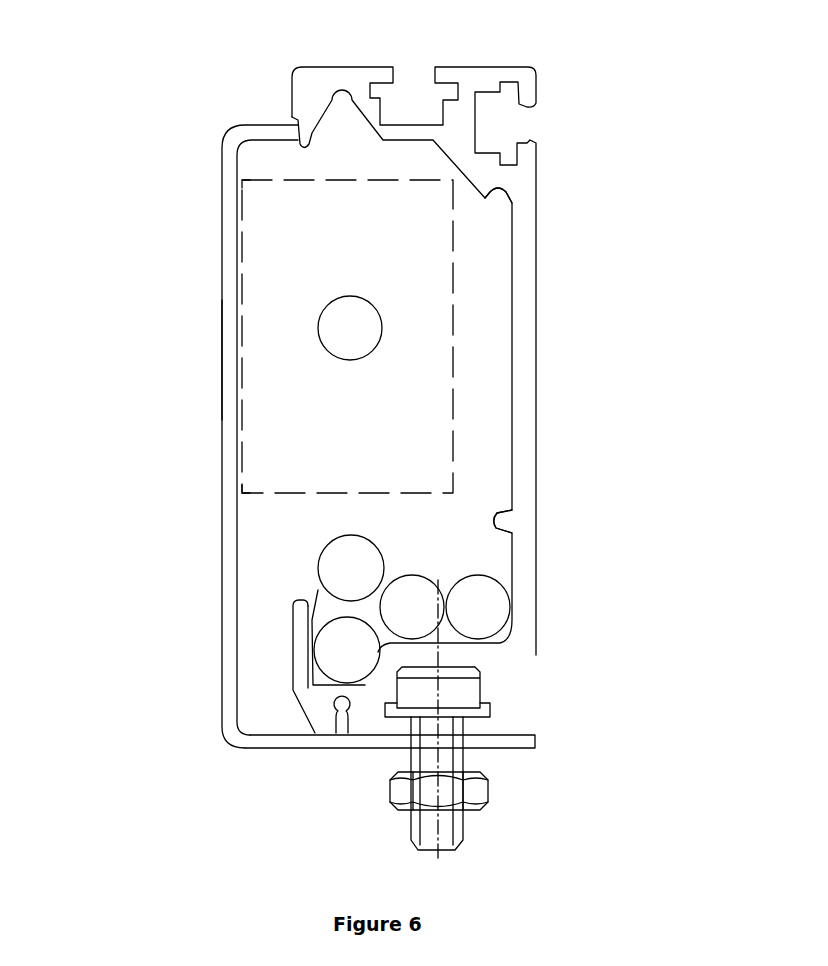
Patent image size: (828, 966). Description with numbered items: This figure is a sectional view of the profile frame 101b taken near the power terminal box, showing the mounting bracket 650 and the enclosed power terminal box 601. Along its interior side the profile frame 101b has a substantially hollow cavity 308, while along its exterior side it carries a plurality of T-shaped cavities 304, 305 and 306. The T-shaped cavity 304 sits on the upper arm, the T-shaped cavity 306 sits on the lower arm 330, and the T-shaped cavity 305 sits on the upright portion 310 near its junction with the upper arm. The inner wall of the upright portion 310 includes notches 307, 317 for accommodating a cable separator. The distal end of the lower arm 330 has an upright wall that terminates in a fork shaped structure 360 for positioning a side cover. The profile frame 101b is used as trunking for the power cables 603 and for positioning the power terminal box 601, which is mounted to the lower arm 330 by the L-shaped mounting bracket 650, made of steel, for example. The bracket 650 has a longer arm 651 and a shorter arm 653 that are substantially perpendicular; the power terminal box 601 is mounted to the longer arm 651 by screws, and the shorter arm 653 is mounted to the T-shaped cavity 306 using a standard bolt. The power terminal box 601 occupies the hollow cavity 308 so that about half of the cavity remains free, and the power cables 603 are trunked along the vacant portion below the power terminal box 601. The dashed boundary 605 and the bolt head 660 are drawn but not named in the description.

The profile frame 101b is at (170, 772).
The T-shaped cavity 304 is at (402, 100).
The T-shaped cavity 305 is at (495, 123).
The T-shaped cavity 306 is at (535, 780).
The notch 307 is at (497, 533).
The hollow cavity 308 is at (350, 597).
The upright portion 310 is at (522, 382).
The notch 317 is at (485, 203).
The lower arm 330 is at (378, 722).
The fork shaped structure 360 is at (295, 613).
The power terminal box 601 is at (329, 250).
The power cables 603 is at (497, 595).
The cavity boundary 605 is at (242, 180).
The mounting bracket 650 is at (228, 513).
The longer arm 651 is at (222, 358).
The shorter arm 653 is at (272, 743).
The bolt head 660 is at (462, 695).